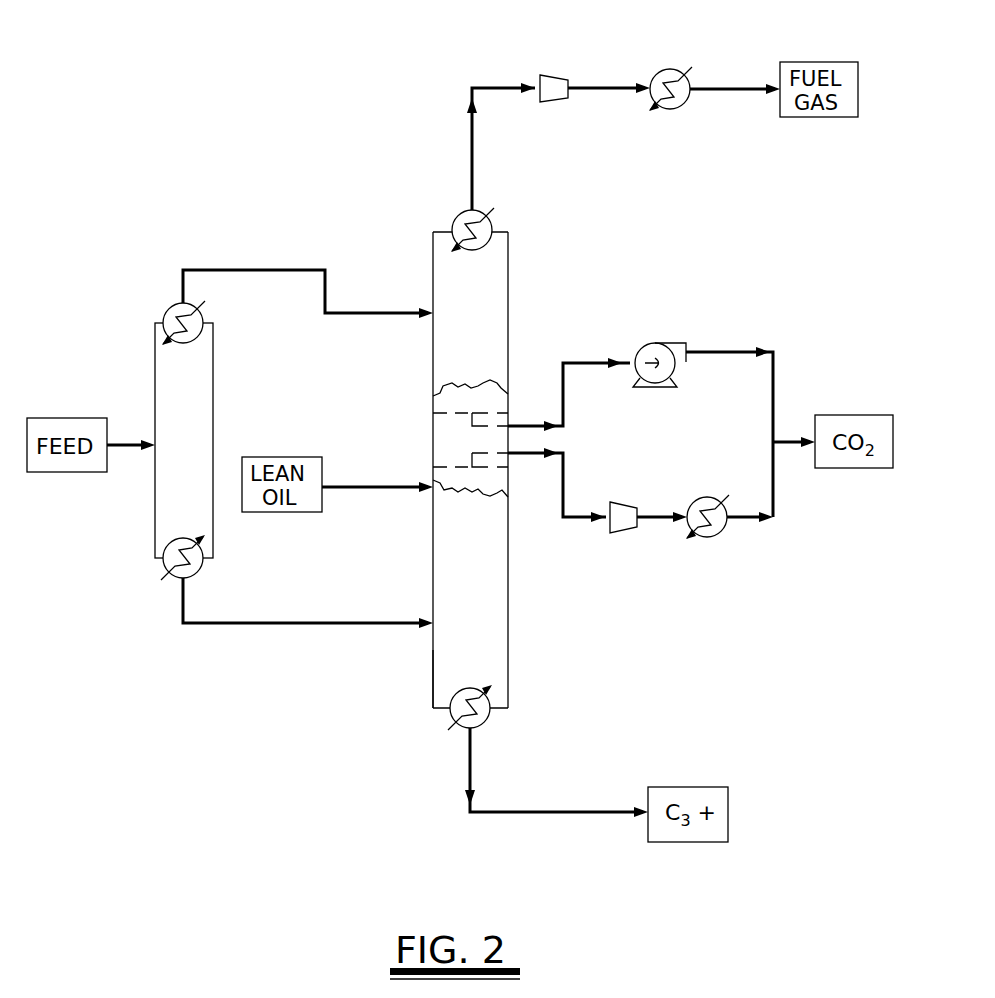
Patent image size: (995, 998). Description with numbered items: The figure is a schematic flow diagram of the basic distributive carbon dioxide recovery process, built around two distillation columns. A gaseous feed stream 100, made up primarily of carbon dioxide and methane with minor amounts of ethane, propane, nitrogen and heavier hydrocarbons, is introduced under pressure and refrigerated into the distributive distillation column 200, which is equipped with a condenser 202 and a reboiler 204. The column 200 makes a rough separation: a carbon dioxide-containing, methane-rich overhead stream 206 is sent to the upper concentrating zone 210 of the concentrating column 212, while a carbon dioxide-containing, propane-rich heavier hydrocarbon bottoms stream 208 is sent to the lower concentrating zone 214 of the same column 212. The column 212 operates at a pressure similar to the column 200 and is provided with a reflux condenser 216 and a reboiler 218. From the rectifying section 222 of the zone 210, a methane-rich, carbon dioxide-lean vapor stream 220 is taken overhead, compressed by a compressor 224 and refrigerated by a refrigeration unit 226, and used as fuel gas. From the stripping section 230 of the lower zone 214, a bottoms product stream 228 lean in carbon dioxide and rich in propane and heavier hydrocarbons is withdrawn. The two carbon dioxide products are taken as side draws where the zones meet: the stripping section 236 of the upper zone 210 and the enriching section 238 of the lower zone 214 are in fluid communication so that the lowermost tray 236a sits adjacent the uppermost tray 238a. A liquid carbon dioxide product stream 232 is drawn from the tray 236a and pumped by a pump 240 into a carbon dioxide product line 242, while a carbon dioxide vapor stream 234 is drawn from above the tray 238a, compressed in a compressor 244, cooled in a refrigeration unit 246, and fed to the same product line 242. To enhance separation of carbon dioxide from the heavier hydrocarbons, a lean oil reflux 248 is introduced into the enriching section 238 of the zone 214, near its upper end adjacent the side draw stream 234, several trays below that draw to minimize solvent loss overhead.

The feed stream 100 is at (143, 438).
The column 200 is at (108, 569).
The condenser 202 is at (172, 305).
The reboiler 204 is at (176, 582).
The overhead stream 206 is at (262, 268).
The bottoms stream 208 is at (273, 626).
The upper concentrating zone 210 is at (487, 325).
The column 212 is at (503, 480).
The lower concentrating zone 214 is at (478, 618).
The reflux condenser 216 is at (455, 225).
The reboiler 218 is at (465, 730).
The vapor stream 220 is at (470, 135).
The rectifying section 222 is at (502, 287).
The compressor 224 is at (558, 75).
The refrigeration unit 226 is at (678, 110).
The bottoms product stream 228 is at (588, 810).
The stripping section 230 is at (458, 665).
The carbon dioxide product stream 232 is at (540, 422).
The carbon dioxide vapor stream 234 is at (540, 465).
The stripping section 236 is at (450, 370).
The lowermost tray 236a is at (465, 410).
The enriching section 238 is at (467, 510).
The uppermost tray 238a is at (460, 466).
The pump 240 is at (658, 343).
The carbon dioxide product line 242 is at (785, 435).
The compressor 244 is at (618, 535).
The refrigeration unit 246 is at (705, 540).
The lean oil reflux 248 is at (345, 517).